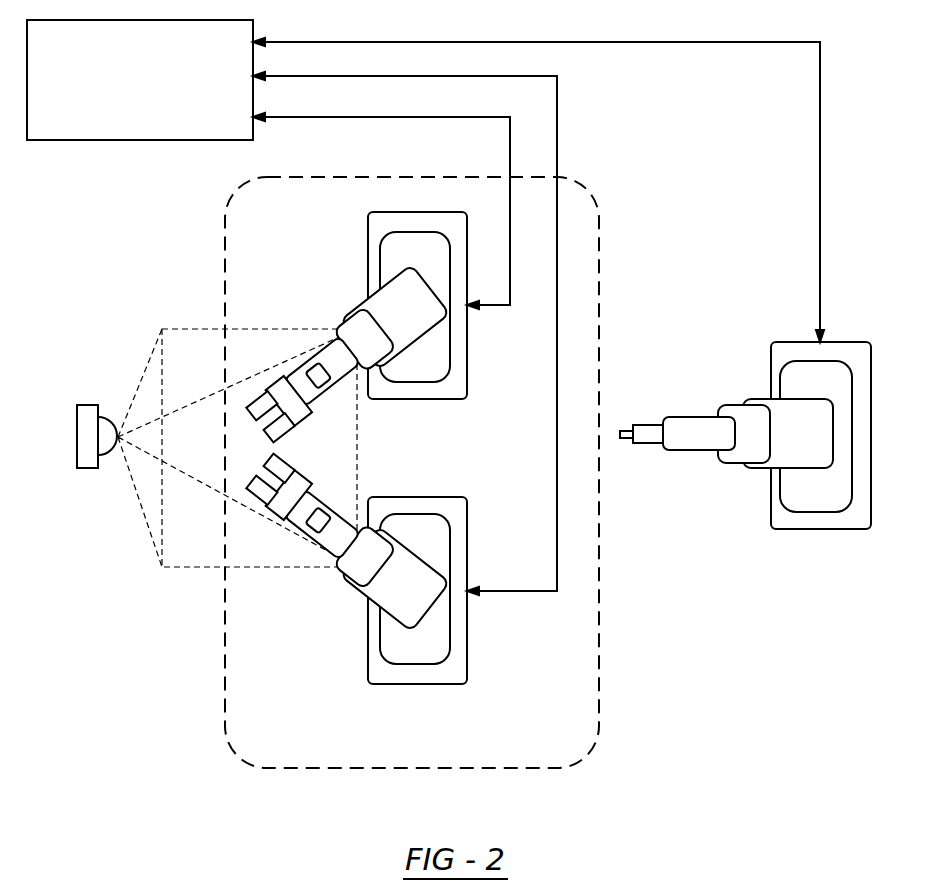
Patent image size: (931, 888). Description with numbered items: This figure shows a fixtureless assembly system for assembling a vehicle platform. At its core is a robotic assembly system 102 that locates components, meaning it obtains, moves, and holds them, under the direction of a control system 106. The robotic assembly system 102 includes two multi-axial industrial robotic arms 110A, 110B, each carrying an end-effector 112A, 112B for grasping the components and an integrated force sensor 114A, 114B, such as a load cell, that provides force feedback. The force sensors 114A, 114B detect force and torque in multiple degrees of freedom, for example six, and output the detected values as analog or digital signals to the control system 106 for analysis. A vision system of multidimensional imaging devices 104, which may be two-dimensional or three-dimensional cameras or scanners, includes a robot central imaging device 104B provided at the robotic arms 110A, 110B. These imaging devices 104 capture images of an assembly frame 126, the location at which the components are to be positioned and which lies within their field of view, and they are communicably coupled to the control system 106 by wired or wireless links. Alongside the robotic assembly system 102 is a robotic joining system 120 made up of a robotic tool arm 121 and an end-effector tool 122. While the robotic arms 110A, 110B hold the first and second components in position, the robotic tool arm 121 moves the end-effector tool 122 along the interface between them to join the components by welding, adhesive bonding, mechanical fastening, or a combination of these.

The robotic assembly system 102 is at (600, 262).
The multidimensional imaging devices 104 is at (66, 452).
The robot central imaging device 104B is at (327, 383).
The control system 106 is at (150, 122).
The robotic arm 110A is at (340, 292).
The robotic arm 110B is at (315, 588).
The end-effector 112A is at (293, 363).
The end-effector 112B is at (267, 535).
The force sensor 114A is at (282, 395).
The force sensor 114B is at (277, 503).
The robotic joining system 120 is at (752, 390).
The robotic tool arm 121 is at (698, 457).
The end-effector tool 122 is at (624, 428).
The assembly frame 126 is at (180, 328).